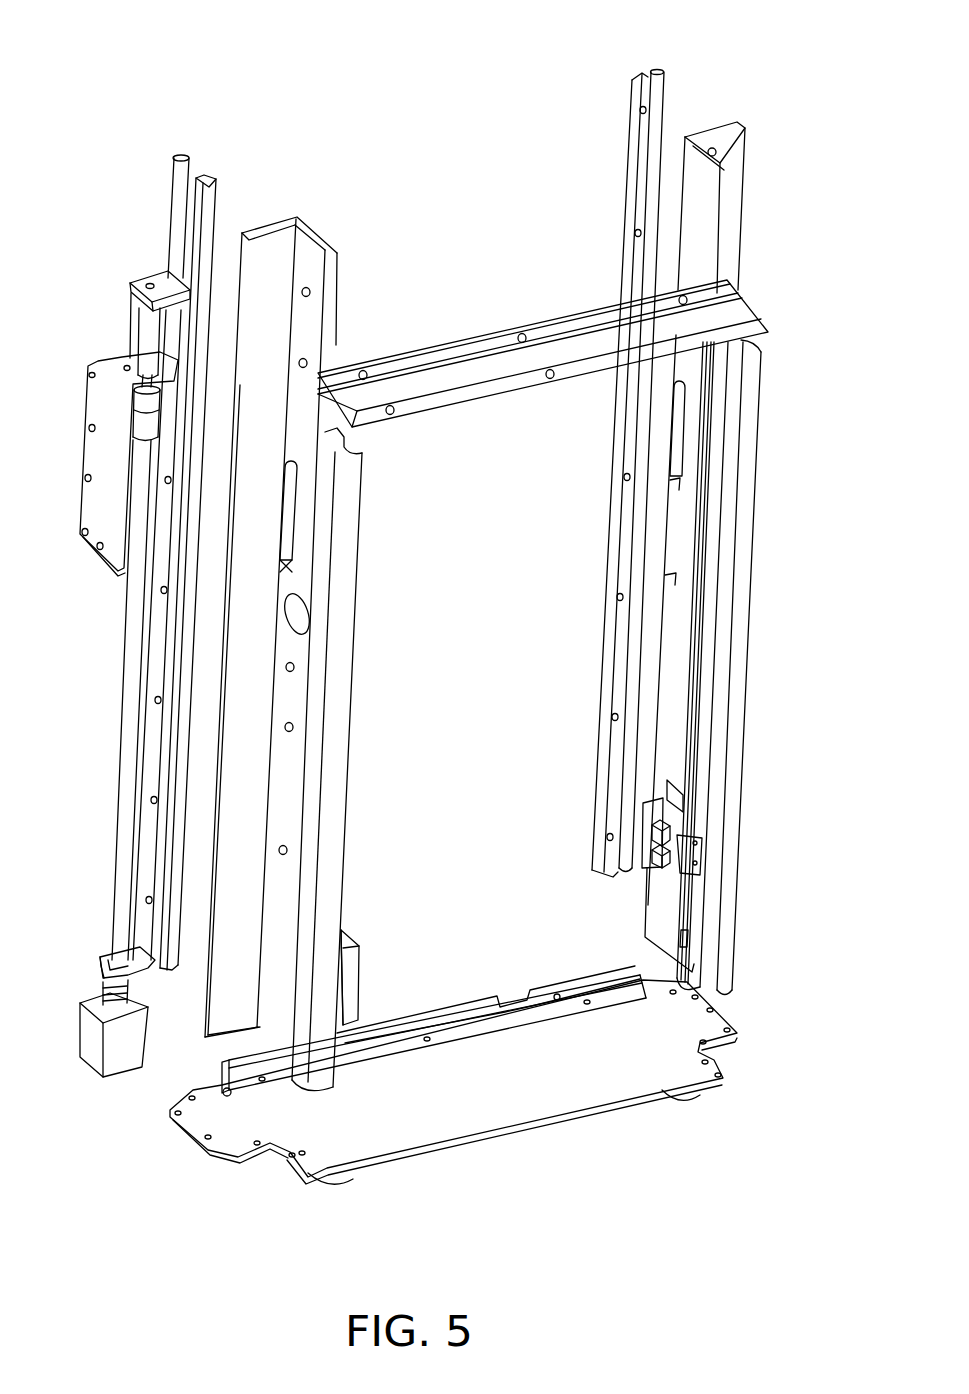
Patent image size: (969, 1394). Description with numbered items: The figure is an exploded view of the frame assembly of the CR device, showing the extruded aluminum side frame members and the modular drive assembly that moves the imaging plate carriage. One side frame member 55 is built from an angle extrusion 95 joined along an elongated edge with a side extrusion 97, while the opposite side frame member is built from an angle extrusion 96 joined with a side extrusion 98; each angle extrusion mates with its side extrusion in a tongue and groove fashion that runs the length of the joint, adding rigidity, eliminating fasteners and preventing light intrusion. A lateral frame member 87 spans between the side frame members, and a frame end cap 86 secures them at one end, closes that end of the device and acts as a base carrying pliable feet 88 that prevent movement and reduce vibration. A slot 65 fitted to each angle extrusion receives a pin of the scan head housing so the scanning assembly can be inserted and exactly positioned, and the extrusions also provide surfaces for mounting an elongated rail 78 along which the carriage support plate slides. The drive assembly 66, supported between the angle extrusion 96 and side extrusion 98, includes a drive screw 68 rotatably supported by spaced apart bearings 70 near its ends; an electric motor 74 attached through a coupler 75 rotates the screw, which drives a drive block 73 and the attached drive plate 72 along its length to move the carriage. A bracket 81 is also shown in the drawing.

The frame member 55 is at (716, 458).
The slot 65 is at (300, 528).
The drive assembly 66 is at (110, 741).
The drive screw 68 is at (113, 843).
The bearings 70 is at (128, 287).
The drive plate 72 is at (85, 498).
The drive block 73 is at (143, 410).
The electric motor 74 is at (79, 1045).
The coupler 75 is at (101, 996).
The elongated rail 78 is at (180, 155).
The sensor bracket 81 is at (655, 838).
The frame end cap 86 is at (509, 1110).
The frame member 87 is at (466, 403).
The feet 88 is at (341, 1186).
The angle extrusion 95 is at (709, 128).
The angle extrusion 96 is at (253, 1001).
The side extrusion 97 is at (745, 744).
The side extrusion 98 is at (351, 738).